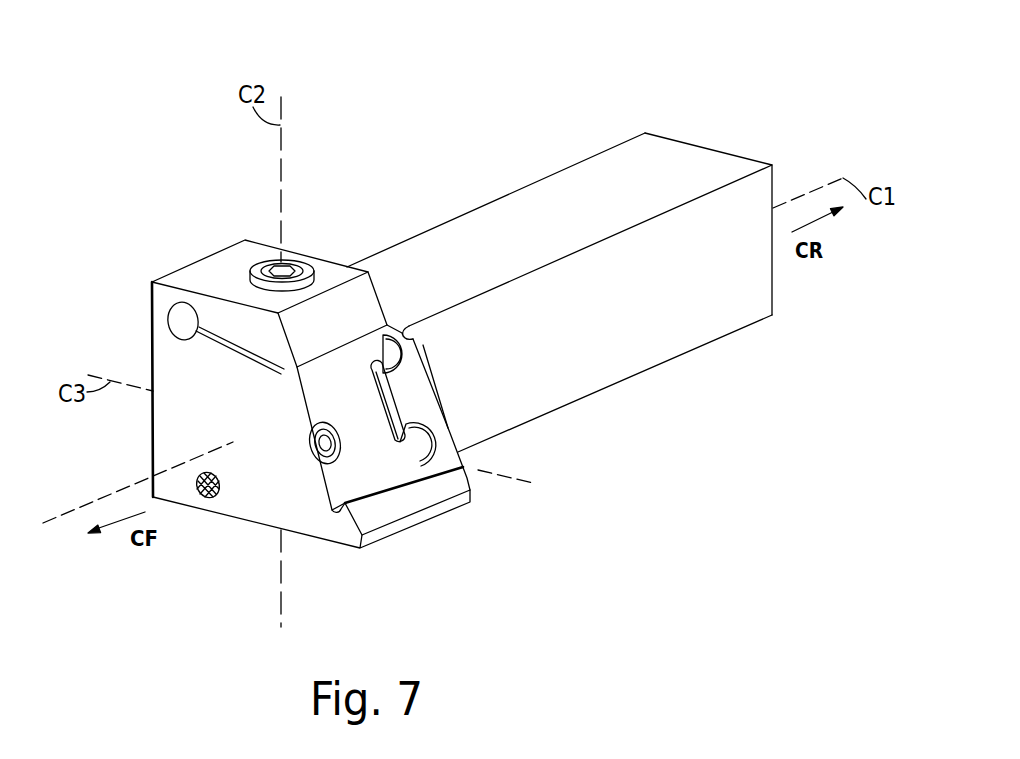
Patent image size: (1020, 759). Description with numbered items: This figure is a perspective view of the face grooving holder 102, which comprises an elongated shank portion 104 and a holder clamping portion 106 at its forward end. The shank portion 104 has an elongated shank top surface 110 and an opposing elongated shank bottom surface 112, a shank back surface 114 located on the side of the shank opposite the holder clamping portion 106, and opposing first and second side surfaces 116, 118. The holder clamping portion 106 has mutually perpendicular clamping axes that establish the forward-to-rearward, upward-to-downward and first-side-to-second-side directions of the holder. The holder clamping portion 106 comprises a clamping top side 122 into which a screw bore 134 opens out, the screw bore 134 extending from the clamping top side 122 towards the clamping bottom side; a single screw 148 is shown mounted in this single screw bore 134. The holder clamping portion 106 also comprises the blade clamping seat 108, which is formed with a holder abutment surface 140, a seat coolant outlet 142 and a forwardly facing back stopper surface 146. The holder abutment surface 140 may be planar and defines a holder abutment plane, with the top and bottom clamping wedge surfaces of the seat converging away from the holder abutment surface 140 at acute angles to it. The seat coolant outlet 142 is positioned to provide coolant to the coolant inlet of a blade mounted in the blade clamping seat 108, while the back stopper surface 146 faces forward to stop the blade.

The face grooving holder 102 is at (135, 172).
The shank portion 104 is at (553, 162).
The holder clamping portion 106 is at (190, 255).
The blade clamping seat 108 is at (312, 413).
The shank top surface 110 is at (640, 202).
The shank bottom surface 112 is at (655, 370).
The shank back surface 114 is at (722, 143).
The first side surface 116 is at (613, 349).
The second side surface 118 is at (452, 205).
The clamping top side 122 is at (227, 258).
The screw bore 134 is at (327, 270).
The holder abutment surface 140 is at (374, 420).
The seat coolant outlet 142 is at (342, 453).
The back stopper surface 146 is at (465, 466).
The screw 148 is at (258, 270).